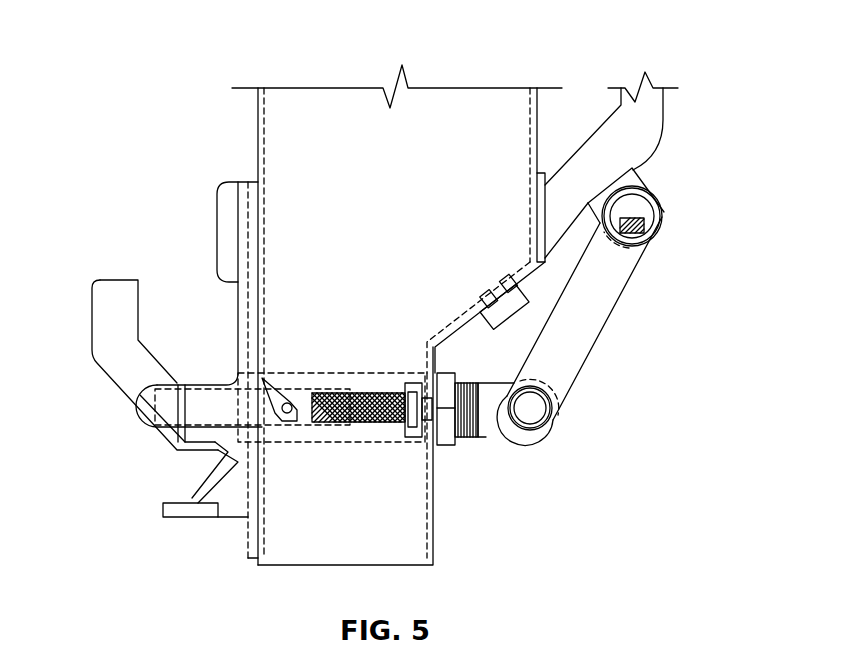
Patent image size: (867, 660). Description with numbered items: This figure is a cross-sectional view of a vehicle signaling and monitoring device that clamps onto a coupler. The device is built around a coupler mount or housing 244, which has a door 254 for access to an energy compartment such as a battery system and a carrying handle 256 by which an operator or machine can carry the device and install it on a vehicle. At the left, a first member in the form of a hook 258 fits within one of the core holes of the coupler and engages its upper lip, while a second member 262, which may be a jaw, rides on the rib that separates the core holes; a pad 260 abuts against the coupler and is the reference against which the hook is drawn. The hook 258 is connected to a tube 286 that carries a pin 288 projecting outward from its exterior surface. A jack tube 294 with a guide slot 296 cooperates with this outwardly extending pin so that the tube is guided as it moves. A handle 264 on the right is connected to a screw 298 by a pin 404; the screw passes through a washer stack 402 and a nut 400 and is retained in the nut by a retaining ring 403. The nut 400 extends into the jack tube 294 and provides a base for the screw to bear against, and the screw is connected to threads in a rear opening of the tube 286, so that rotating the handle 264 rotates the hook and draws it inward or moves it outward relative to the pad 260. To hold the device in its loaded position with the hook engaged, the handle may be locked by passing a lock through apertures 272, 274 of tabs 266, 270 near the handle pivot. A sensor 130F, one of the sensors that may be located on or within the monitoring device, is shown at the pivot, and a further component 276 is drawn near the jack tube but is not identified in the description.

The coupler mount or housing 244 is at (400, 527).
The door 254 is at (417, 184).
The carrying handle 256 is at (633, 128).
The hook 258 is at (117, 290).
The pad 260 is at (225, 203).
The second member 262 is at (222, 458).
The handle 264 is at (588, 328).
The tab 266 is at (631, 185).
The tab 270 is at (638, 250).
The aperture 272 is at (637, 210).
The aperture 274 is at (705, 216).
The fastener 276 is at (507, 303).
The tube 286 is at (327, 392).
The pin 288 is at (293, 390).
The jack tube 294 is at (396, 380).
The guide slot 296 is at (288, 402).
The screw 298 is at (375, 392).
The sensor 130F is at (642, 227).
The nut 400 is at (453, 452).
The washer stack 402 is at (465, 437).
The retaining ring 403 is at (415, 433).
The pin 404 is at (533, 408).